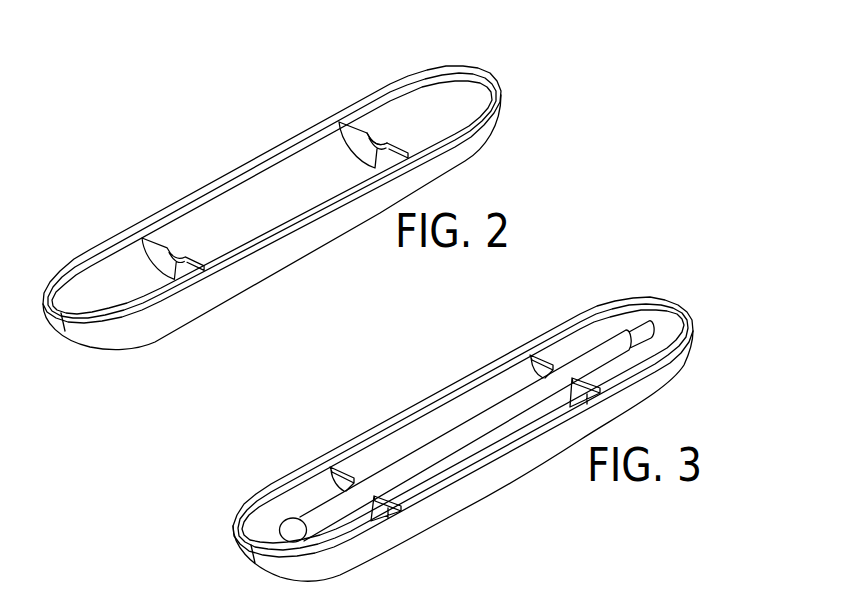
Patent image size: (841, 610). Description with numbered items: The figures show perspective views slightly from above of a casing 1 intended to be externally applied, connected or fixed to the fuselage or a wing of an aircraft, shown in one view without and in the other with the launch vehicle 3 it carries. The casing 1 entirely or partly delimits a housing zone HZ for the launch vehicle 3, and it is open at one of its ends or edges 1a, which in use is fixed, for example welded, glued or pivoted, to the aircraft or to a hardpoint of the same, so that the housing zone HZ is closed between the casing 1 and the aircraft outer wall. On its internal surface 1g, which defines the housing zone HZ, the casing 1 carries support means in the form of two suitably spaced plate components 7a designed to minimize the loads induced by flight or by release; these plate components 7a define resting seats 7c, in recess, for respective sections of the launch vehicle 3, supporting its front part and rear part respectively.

In FIG. 2, the casing 1 is at (308, 182).
In FIG. 3, the casing 1 is at (463, 413).
In FIG. 2, the end or edge 1a is at (285, 130).
In FIG. 3, the end or edge 1a is at (447, 393).
In FIG. 2, the internal surface 1g is at (430, 90).
In FIG. 3, the internal surface 1g is at (297, 500).
In FIG. 2, the housing zone HZ is at (253, 200).
In FIG. 3, the housing zone HZ is at (607, 327).
In FIG. 2, the plate component 7a is at (241, 157).
In FIG. 3, the plate component 7a is at (550, 357).
In FIG. 2, the resting seat 7c is at (185, 248).
In FIG. 3, the launch vehicle 3 is at (515, 403).